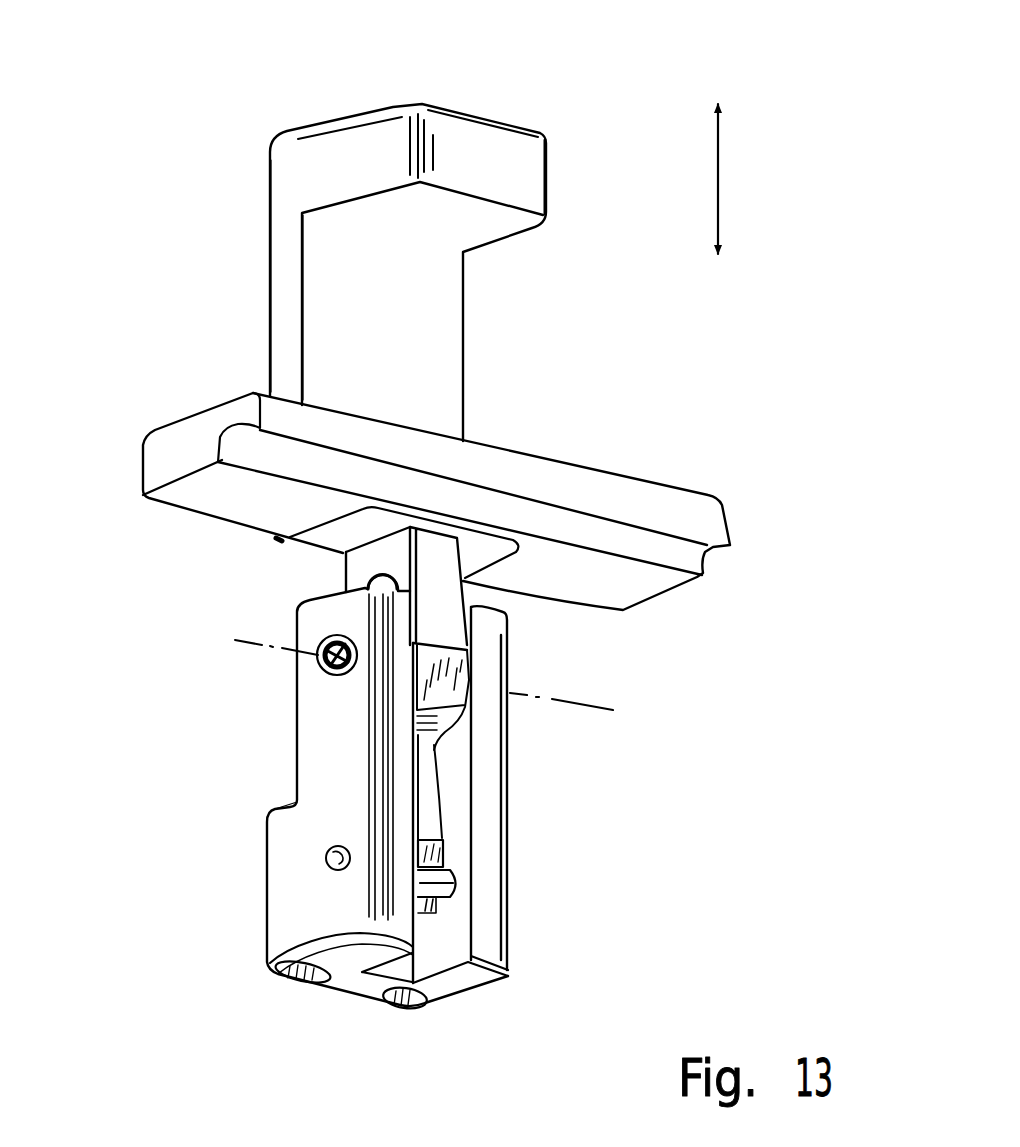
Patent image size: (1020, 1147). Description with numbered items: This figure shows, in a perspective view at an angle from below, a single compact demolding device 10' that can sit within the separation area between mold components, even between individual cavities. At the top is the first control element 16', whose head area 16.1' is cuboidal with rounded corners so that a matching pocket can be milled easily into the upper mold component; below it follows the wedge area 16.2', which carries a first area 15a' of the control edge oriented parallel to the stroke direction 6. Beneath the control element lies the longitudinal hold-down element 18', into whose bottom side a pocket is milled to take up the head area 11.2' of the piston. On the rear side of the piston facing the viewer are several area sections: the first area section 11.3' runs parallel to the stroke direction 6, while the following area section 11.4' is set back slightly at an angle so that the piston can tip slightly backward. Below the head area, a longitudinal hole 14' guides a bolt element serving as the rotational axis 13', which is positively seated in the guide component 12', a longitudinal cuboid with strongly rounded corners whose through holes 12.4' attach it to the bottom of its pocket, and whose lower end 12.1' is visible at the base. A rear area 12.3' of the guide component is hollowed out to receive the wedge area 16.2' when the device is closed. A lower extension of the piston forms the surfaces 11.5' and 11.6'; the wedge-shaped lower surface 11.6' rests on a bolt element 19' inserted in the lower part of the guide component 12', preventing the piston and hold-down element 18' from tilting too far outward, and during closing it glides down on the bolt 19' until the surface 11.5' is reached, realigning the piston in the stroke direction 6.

The demolding device 10' is at (432, 543).
The first control element 16' is at (295, 224).
The head area 16.1' is at (394, 86).
The wedge area 16.2' is at (166, 276).
The first area of control edge 15a' is at (206, 307).
The stroke direction 6 is at (754, 179).
The hold-down element 18' is at (476, 501).
The head area of piston 11.2' is at (281, 549).
The first area section 11.3' is at (618, 755).
The area section 11.4' is at (622, 788).
The lower extension surface 11.5' is at (622, 787).
The lower surface 11.6' is at (622, 876).
The bolt element 19' is at (613, 915).
The guide component 12' is at (273, 827).
The longitudinal hole 14' is at (229, 594).
The rotational axis 13' is at (209, 649).
The rear area 12.3' is at (167, 793).
The through holes 12.4' is at (351, 1017).
The lower end of housing 12.1' is at (426, 1015).